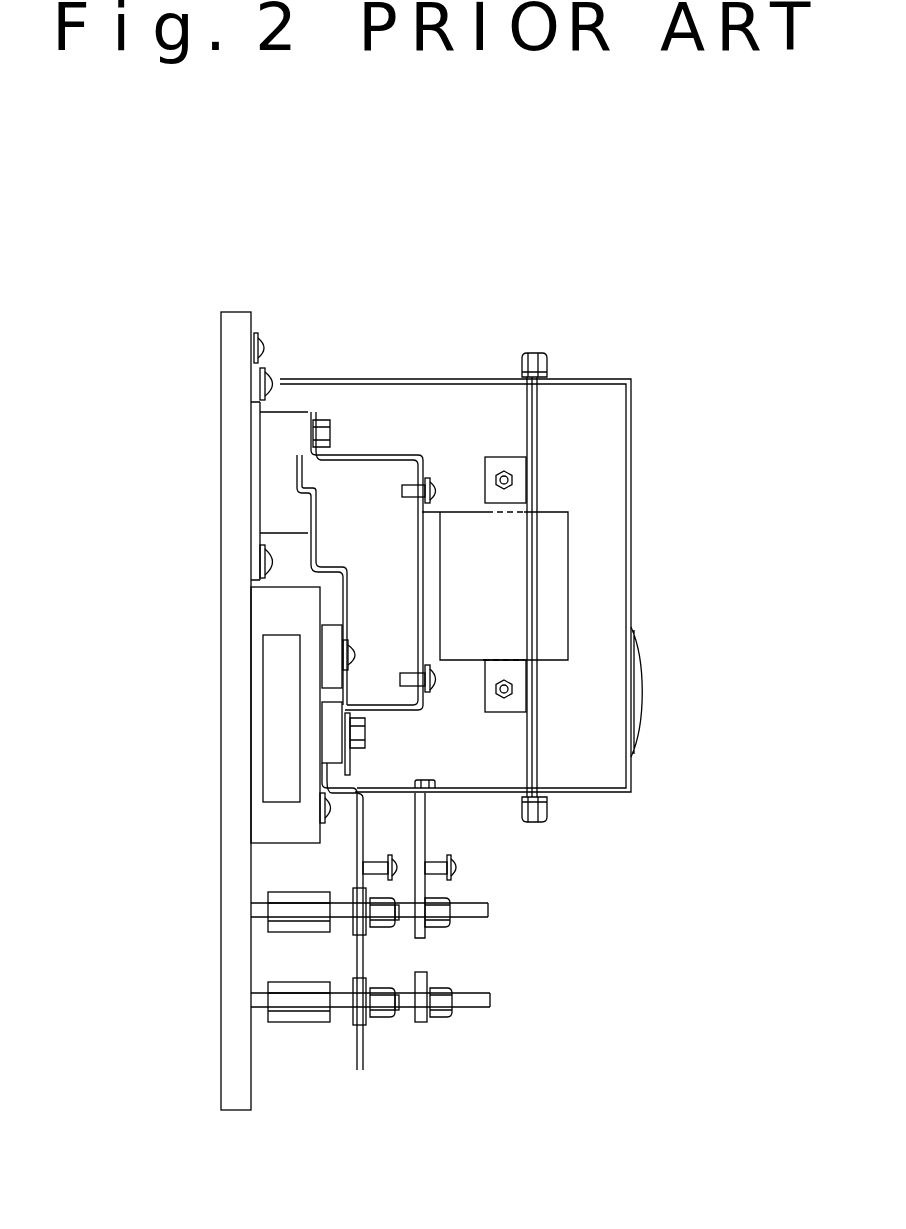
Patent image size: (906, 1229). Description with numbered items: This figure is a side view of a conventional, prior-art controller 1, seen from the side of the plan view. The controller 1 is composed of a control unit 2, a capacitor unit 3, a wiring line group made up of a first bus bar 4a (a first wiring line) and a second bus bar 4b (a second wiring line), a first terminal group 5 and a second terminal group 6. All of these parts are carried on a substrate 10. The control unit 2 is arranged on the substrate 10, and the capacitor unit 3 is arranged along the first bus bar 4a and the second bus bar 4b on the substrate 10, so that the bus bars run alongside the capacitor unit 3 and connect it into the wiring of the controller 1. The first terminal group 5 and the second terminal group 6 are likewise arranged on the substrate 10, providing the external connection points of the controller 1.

The controller 1 is at (440, 326).
The control unit 2 is at (598, 428).
The capacitor unit 3 is at (553, 547).
The first bus bar 4a is at (310, 430).
The second bus bar 4b is at (347, 733).
The first terminal group 5 is at (336, 1070).
The second terminal group 6 is at (500, 1042).
The substrate 10 is at (242, 318).